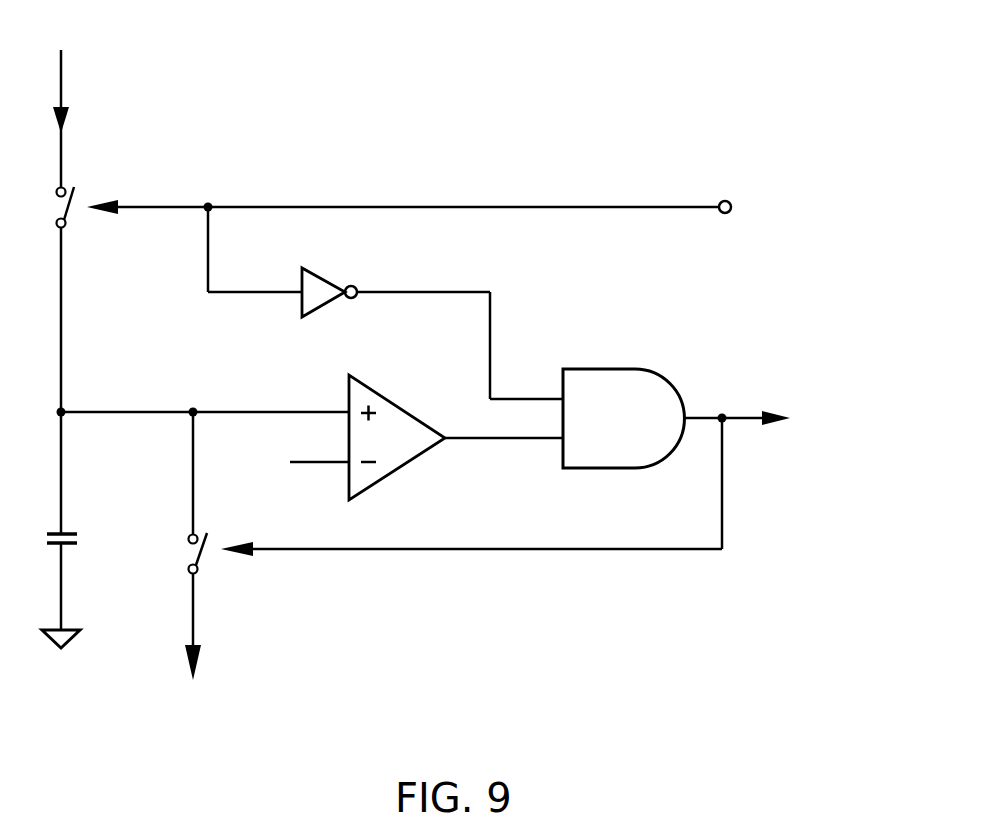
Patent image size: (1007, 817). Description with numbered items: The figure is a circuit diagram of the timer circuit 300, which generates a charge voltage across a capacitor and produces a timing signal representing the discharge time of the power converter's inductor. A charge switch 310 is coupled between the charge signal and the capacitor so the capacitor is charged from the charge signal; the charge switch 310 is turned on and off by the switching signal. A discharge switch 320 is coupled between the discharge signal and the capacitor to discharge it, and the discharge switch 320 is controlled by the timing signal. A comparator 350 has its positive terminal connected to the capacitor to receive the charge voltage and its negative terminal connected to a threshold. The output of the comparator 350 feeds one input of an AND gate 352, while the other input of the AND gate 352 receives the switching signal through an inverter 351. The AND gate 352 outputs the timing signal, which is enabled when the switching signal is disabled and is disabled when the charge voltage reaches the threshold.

The timer circuit 300 is at (853, 25).
The charge switch 310 is at (74, 193).
The discharge switch 320 is at (199, 560).
The comparator 350 is at (405, 474).
The inverter 351 is at (325, 303).
The AND gate 352 is at (607, 368).